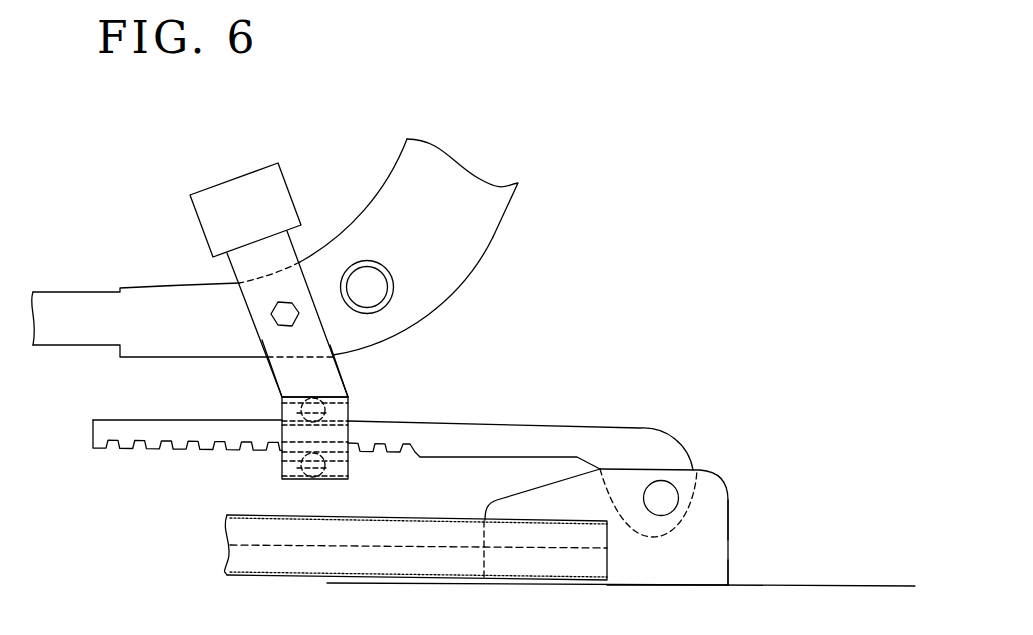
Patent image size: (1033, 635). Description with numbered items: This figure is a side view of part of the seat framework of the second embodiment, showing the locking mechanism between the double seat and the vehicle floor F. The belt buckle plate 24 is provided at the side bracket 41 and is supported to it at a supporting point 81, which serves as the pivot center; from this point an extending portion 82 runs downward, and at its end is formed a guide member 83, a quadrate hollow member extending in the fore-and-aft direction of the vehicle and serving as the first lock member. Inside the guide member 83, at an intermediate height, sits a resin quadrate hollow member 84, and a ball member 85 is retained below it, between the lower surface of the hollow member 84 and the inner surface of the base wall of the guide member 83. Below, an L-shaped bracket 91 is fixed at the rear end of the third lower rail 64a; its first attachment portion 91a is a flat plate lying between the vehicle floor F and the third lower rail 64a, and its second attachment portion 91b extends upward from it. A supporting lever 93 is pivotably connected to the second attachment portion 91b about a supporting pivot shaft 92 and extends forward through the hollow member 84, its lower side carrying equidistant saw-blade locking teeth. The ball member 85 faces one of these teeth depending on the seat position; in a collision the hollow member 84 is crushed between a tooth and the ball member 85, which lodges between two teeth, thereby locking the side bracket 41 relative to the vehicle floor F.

The side bracket 41 is at (492, 235).
The belt buckle plate 24 is at (264, 338).
The supporting point 81 is at (264, 314).
The extending portion 82 is at (279, 378).
The guide member 83 is at (348, 404).
The quadrate hollow member 84 is at (282, 466).
The ball member 85 is at (348, 466).
The supporting lever 93 is at (544, 427).
The supporting pivot shaft 92 is at (661, 516).
The L-shaped bracket 91 is at (797, 523).
The second attachment portion 91b is at (728, 533).
The first attachment portion 91a is at (718, 586).
The third lower rail 64a is at (272, 577).
The vehicle floor F is at (828, 585).